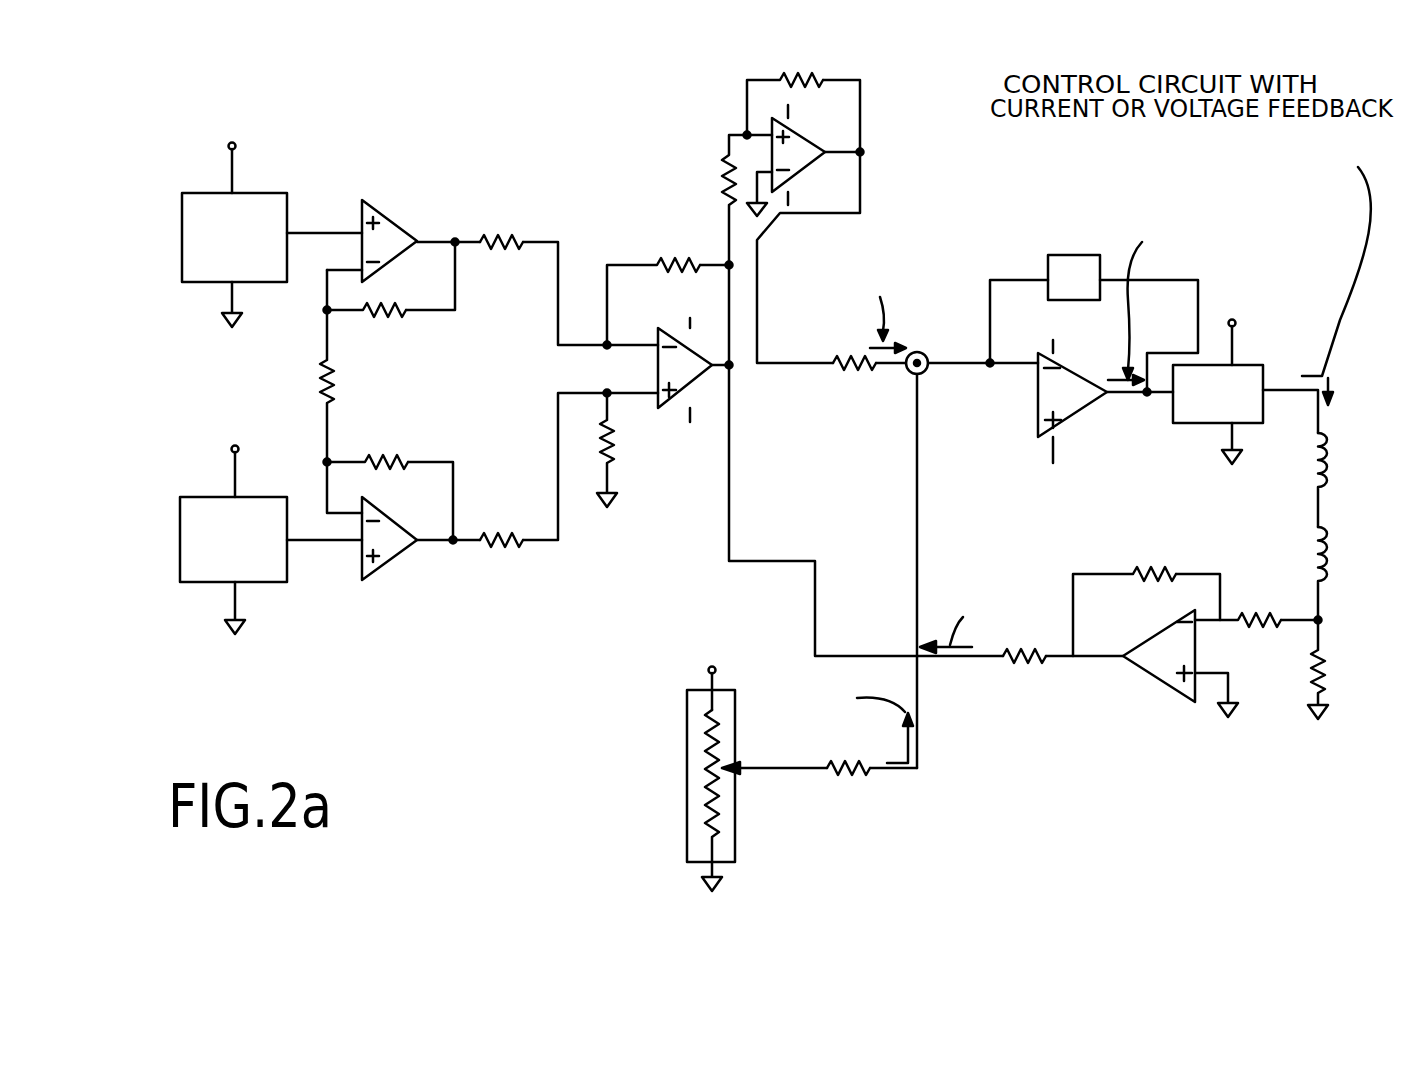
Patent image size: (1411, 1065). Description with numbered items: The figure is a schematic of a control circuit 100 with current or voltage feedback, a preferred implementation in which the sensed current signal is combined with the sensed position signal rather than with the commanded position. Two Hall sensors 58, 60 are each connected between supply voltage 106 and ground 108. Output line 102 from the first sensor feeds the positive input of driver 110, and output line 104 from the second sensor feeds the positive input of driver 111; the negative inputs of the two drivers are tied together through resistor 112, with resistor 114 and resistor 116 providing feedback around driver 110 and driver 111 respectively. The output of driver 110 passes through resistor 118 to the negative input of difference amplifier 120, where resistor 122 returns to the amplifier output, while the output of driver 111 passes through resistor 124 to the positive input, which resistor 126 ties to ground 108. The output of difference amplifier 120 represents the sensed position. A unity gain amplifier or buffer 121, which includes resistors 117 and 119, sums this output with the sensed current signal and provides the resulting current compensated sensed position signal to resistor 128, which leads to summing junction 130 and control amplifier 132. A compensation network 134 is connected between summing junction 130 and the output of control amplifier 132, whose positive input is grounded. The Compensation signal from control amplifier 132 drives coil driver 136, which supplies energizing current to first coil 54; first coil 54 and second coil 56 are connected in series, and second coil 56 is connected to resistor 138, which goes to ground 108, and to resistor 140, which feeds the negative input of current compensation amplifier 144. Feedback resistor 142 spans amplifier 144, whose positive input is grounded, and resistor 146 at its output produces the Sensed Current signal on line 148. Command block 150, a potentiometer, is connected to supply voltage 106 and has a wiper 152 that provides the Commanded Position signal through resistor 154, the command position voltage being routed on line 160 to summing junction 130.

The first coil 54 is at (1330, 473).
The second coil 56 is at (1330, 548).
The Hall sensor 58 is at (182, 240).
The Hall sensor 60 is at (180, 540).
The control circuit 100 is at (432, 804).
The output line 102 is at (318, 233).
The output line 104 is at (315, 540).
The supply voltage 106 is at (237, 165).
The ground 108 is at (232, 298).
The driver 110 is at (393, 215).
The driver 111 is at (392, 560).
The resistor 112 is at (332, 395).
The resistor 114 is at (392, 317).
The resistor 116 is at (390, 456).
The resistor 117 is at (732, 160).
The resistor 118 is at (488, 237).
The resistor 119 is at (822, 73).
The difference amplifier 120 is at (663, 327).
The unity gain amplifier or buffer 121 is at (810, 137).
The resistor 122 is at (668, 255).
The resistor 124 is at (497, 528).
The resistor 126 is at (605, 452).
The resistor 128 is at (843, 356).
The summing junction 130 is at (926, 372).
The control amplifier 132 is at (1067, 420).
The compensation network 134 is at (1085, 255).
The coil driver 136 is at (1262, 365).
The resistor 138 is at (1317, 683).
The resistor 140 is at (1247, 612).
The feedback resistor 142 is at (1147, 567).
The current compensation amplifier 144 is at (1145, 673).
The resistor 146 is at (1017, 662).
The line 148 is at (950, 660).
The command block 150 is at (687, 758).
The wiper 152 is at (763, 771).
The resistor 154 is at (857, 772).
The line 160 is at (917, 500).